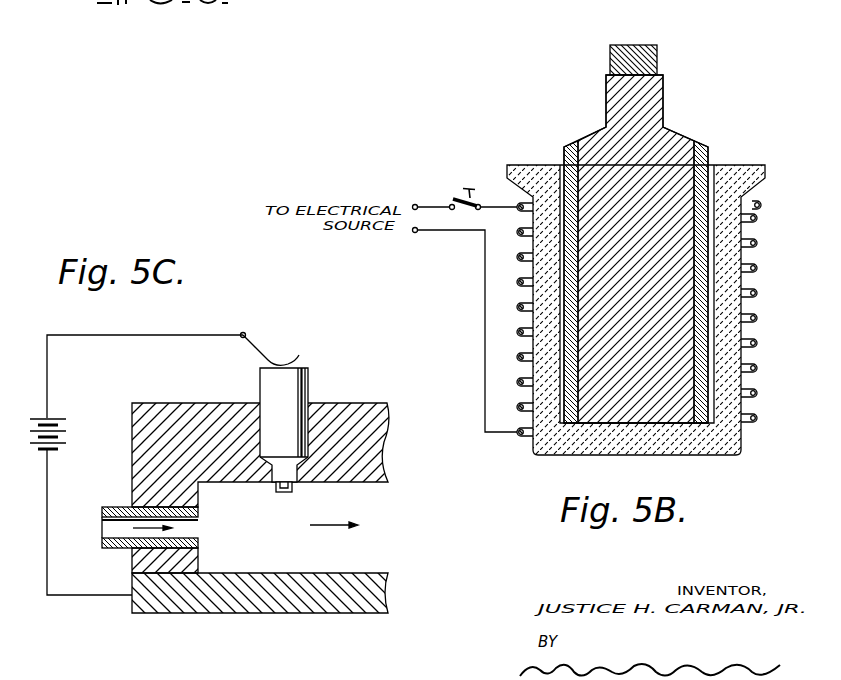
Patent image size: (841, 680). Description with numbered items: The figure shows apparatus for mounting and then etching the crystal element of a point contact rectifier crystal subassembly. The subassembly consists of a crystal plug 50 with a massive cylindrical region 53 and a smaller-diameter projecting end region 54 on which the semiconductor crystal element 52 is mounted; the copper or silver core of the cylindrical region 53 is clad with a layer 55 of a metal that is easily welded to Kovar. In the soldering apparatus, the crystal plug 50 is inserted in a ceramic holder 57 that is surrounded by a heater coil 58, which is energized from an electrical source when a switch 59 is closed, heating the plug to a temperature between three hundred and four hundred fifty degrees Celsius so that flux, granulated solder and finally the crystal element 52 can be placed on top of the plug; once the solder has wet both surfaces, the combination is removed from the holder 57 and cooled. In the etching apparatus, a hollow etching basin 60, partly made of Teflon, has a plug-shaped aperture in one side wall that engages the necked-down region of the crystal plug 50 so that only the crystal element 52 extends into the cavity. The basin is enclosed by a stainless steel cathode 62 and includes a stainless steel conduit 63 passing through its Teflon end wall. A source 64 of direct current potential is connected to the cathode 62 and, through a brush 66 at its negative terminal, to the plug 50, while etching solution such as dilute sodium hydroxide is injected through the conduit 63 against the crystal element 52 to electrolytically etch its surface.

In FIG. 5B, the crystal plug 50 is at (696, 122).
In FIG. 5C, the crystal plug 50 is at (316, 375).
In FIG. 5B, the semiconductor crystal element 52 is at (658, 58).
In FIG. 5C, the semiconductor crystal element 52 is at (283, 494).
In FIG. 5B, the massive cylindrical region 53 is at (590, 140).
In FIG. 5B, the projecting end region 54 is at (640, 96).
In FIG. 5B, the cladding layer 55 is at (702, 147).
In FIG. 5B, the ceramic holder 57 is at (728, 173).
In FIG. 5B, the heater coil 58 is at (516, 204).
In FIG. 5B, the switch 59 is at (463, 190).
In FIG. 5C, the etching basin 60 is at (196, 392).
In FIG. 5C, the stainless steel cathode 62 is at (330, 614).
In FIG. 5C, the conduit 63 is at (106, 548).
In FIG. 5C, the source of direct current potential 64 is at (63, 430).
In FIG. 5C, the brush 66 is at (264, 354).